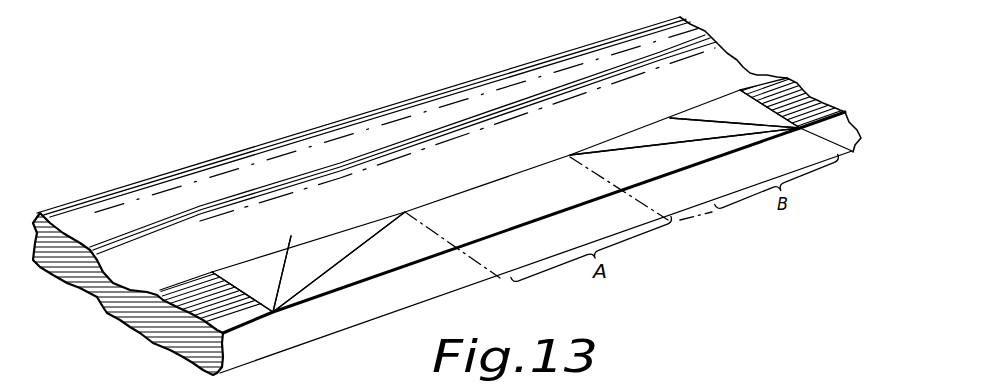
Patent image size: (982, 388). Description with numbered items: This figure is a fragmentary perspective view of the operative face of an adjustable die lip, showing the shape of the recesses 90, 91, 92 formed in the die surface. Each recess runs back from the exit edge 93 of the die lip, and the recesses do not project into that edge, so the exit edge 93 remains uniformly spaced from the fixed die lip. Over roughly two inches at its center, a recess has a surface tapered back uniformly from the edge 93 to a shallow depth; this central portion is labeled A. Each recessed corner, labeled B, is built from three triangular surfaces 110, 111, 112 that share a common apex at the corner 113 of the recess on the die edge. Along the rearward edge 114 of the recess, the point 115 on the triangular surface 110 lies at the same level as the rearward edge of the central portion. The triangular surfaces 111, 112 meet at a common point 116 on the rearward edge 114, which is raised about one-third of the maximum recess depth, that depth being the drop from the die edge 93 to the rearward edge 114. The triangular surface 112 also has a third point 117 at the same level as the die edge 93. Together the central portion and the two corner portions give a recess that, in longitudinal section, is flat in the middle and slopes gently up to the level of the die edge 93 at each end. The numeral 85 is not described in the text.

The strip web 85 is at (750, 63).
The recess 90 is at (358, 108).
The recess 91 is at (421, 58).
The recess 92 is at (375, 110).
The exit edge of the die lip 93 is at (847, 117).
The triangular surface 110 is at (536, 220).
The triangular surface 111 is at (536, 215).
The triangular surface 112 is at (506, 201).
The corner of the recess 113 is at (277, 318).
The rearward edge of the recess 114 is at (487, 183).
The point on triangle 110 115 is at (405, 212).
The common point of triangles 111 and 112 116 is at (670, 118).
The third point of triangle 112 117 is at (212, 272).